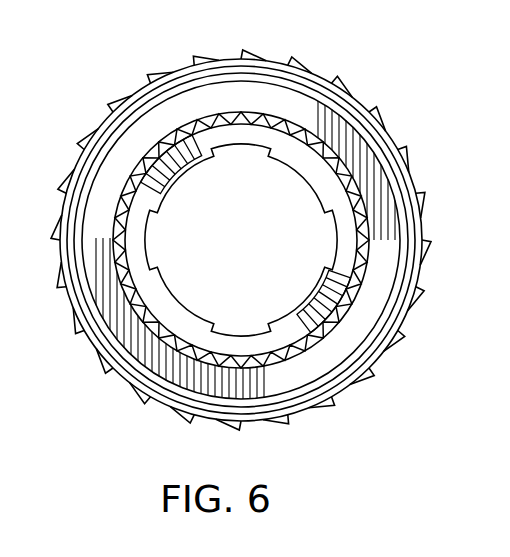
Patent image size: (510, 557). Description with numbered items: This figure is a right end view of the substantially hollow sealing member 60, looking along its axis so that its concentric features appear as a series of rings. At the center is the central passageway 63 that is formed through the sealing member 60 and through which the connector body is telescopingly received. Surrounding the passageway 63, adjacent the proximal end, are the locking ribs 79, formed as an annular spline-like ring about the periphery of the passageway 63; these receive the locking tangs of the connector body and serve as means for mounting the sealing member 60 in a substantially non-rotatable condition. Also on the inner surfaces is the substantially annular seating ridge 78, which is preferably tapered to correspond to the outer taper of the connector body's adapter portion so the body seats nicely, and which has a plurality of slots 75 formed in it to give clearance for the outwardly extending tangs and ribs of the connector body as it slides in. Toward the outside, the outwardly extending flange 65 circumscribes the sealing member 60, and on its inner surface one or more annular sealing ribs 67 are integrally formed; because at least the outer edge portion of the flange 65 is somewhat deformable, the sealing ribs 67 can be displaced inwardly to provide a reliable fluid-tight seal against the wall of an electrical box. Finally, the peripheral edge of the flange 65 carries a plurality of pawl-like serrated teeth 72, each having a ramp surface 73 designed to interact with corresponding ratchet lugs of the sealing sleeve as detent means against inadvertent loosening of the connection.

The sealing member 60 is at (331, 56).
The pawl-like serrated teeth 72 is at (155, 74).
The ramp surface 73 is at (216, 60).
The annular sealing ribs 67 is at (266, 66).
The outwardly extending flange 65 is at (104, 185).
The locking ribs 79 is at (328, 158).
The slots 75 is at (323, 253).
The central passageway 63 is at (184, 242).
The seating ridge 78 is at (292, 330).